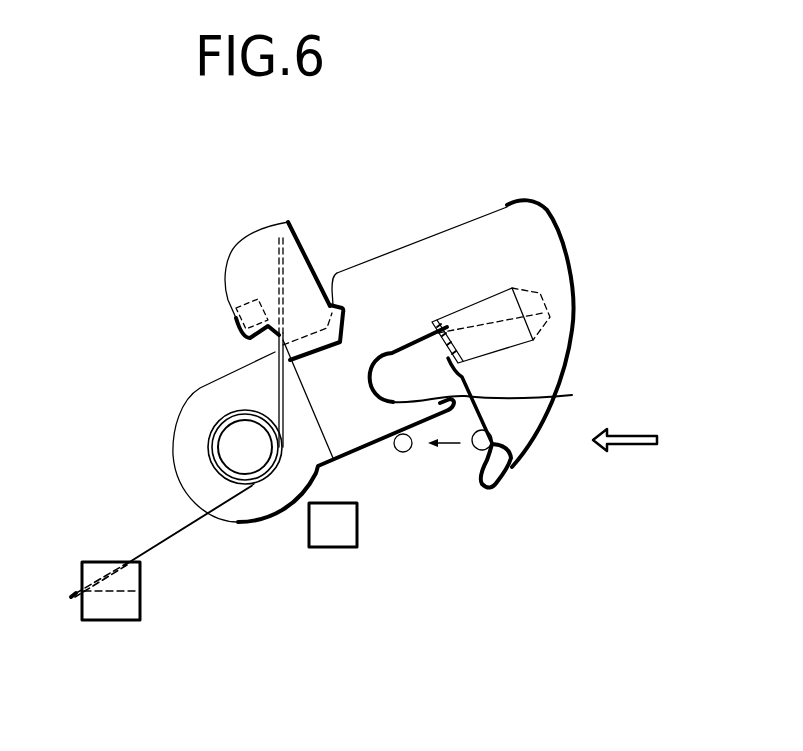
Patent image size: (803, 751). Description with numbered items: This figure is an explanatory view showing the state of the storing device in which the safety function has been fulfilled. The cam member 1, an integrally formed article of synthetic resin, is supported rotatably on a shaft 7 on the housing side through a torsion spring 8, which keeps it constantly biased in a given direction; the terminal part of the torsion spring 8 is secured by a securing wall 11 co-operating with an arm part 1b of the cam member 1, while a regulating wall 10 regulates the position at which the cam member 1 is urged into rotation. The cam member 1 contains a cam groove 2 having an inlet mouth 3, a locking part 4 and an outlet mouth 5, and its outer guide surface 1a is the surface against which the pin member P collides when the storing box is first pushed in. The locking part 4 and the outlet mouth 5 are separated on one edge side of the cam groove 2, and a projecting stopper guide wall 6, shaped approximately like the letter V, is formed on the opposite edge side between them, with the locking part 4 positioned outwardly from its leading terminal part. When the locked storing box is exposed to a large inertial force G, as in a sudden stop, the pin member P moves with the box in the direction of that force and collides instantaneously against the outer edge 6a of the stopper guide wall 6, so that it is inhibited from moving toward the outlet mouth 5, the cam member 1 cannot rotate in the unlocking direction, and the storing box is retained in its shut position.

The cam member 1 is at (513, 223).
The outer guide surface 1a is at (575, 332).
The arm part 1b is at (243, 260).
The cam groove 2 is at (401, 378).
The inlet mouth 3 is at (465, 472).
The locking part 4 is at (513, 470).
The outlet mouth 5 is at (448, 347).
The stopper guide wall 6 is at (493, 396).
The outer edge 6a is at (416, 430).
The shaft 7 is at (240, 435).
The torsion spring 8 is at (183, 532).
The regulating wall 10 is at (332, 540).
The securing wall 11 is at (118, 610).
The pin member P is at (401, 453).
The inertial force G is at (636, 443).